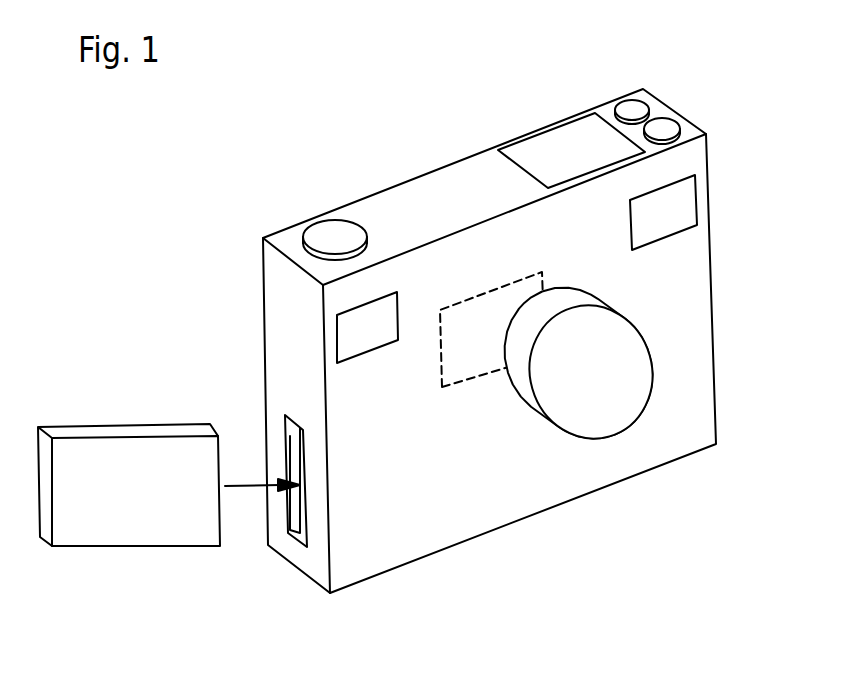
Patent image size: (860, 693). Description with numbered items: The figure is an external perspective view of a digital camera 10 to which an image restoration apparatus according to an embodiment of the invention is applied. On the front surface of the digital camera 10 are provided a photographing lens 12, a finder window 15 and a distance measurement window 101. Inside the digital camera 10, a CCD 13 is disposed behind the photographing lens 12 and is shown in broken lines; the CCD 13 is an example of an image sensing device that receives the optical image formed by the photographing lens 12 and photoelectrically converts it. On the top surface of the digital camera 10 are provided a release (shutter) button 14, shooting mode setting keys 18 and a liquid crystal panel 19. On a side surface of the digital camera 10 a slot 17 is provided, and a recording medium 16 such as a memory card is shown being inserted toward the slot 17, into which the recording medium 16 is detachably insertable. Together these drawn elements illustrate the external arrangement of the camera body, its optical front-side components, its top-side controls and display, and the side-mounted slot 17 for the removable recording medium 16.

The digital camera 10 is at (253, 238).
The photographing lens 12 is at (652, 371).
The CCD 13 is at (489, 290).
The release (shutter) button 14 is at (328, 224).
The finder window 15 is at (336, 331).
The recording medium 16 is at (98, 423).
The slot 17 is at (298, 512).
The shooting mode setting keys 18 is at (676, 119).
The liquid crystal panel 19 is at (564, 128).
The distance measurement window 101 is at (698, 193).